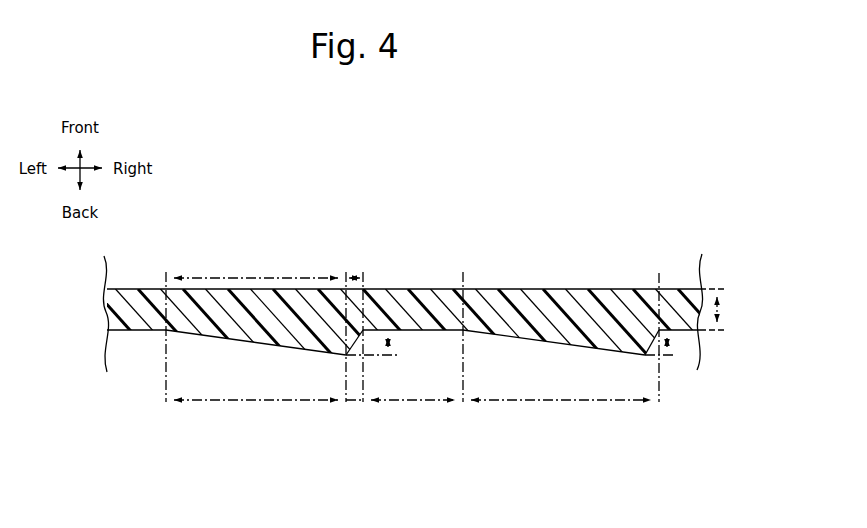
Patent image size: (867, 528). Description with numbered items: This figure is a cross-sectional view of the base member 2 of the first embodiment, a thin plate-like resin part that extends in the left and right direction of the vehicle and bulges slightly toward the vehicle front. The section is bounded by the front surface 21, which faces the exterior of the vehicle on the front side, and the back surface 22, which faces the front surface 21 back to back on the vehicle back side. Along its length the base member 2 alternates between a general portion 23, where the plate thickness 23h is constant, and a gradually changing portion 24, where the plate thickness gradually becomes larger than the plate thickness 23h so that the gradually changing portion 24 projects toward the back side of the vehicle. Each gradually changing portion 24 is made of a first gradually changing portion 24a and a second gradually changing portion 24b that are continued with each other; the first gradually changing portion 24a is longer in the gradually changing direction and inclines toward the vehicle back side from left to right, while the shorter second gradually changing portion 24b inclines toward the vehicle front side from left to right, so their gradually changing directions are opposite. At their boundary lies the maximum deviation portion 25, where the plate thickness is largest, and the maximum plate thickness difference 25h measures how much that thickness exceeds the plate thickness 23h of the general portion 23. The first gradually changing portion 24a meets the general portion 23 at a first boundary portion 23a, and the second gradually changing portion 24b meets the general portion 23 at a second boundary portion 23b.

The base member 2 is at (580, 229).
The front surface 21 is at (153, 266).
The back surface 22 is at (130, 340).
The general portion 23 is at (405, 402).
The first boundary portion 23a is at (166, 342).
The second boundary portion 23b is at (363, 342).
The plate thickness 23h is at (722, 311).
The gradually changing portion 24 is at (269, 402).
The first gradually changing portion 24a is at (251, 277).
The second gradually changing portion 24b is at (355, 276).
The maximum deviation portion 25 is at (346, 364).
The maximum plate thickness difference 25h is at (392, 343).